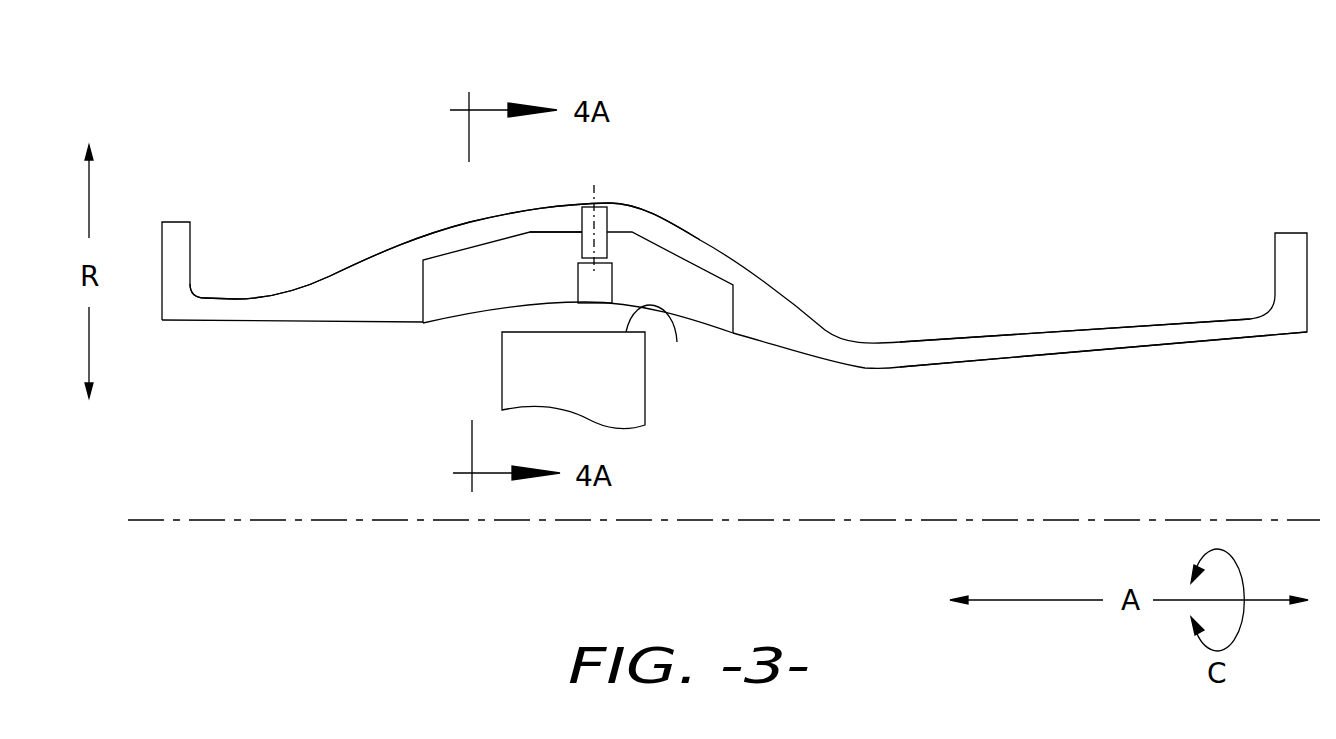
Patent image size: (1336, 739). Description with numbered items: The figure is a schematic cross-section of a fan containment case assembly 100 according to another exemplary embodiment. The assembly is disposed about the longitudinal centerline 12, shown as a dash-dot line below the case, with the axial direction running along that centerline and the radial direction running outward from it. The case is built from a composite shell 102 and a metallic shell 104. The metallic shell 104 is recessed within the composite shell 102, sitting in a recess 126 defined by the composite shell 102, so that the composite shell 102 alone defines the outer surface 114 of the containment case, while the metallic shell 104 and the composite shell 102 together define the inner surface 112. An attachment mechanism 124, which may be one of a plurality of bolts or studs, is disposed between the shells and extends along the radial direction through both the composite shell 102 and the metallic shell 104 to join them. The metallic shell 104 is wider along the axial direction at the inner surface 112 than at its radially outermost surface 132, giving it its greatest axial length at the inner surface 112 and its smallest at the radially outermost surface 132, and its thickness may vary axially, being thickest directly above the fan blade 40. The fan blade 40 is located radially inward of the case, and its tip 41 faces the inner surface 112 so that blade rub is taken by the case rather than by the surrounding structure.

The fan containment case assembly 100 is at (288, 133).
The composite shell 102 is at (228, 300).
The metallic shell 104 is at (675, 270).
The inner surface 112 is at (1095, 358).
The outer surface 114 is at (1093, 318).
The attachment mechanism 124 is at (602, 221).
The recess 126 is at (447, 236).
The radially outermost surface 132 is at (558, 212).
The fan blade 40 is at (513, 349).
The tip 41 is at (665, 343).
The longitudinal centerline 12 is at (1063, 518).